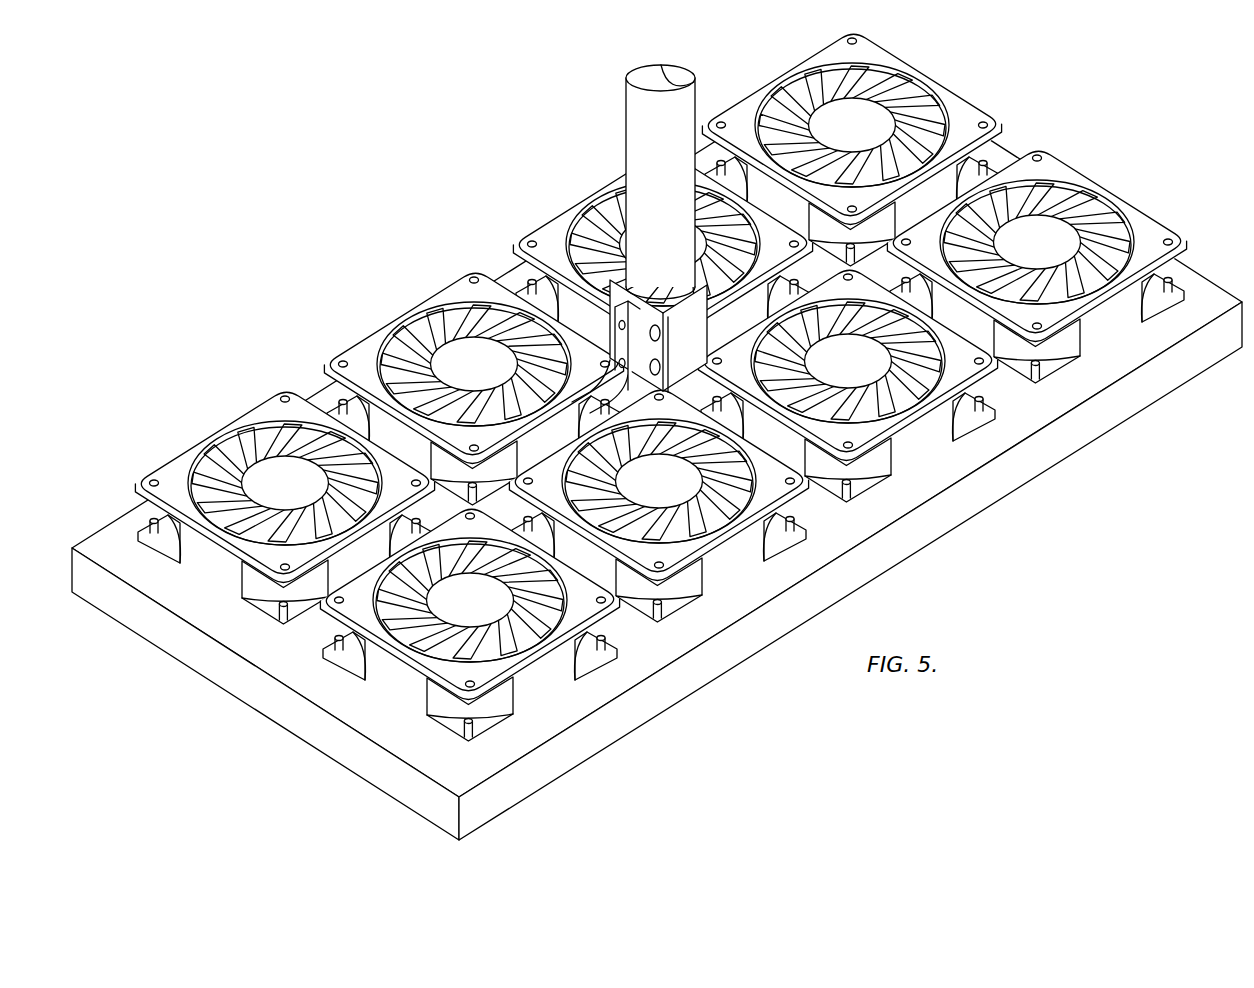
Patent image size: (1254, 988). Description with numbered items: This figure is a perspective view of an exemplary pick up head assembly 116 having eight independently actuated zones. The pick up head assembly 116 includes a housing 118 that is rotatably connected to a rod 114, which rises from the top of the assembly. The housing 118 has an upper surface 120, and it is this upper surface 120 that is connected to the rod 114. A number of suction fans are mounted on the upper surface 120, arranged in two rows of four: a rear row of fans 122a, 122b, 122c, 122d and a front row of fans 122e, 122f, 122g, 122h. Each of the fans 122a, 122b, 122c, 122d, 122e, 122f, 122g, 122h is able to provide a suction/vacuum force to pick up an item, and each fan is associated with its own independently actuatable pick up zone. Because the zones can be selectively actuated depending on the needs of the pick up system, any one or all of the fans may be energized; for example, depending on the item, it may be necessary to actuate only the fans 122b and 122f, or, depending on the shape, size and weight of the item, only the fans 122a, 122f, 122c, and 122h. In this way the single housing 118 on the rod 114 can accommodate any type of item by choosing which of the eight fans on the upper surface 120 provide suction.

The rod 114 is at (632, 103).
The pick up head assembly 116 is at (657, 430).
The housing 118 is at (248, 690).
The upper surface 120 is at (642, 653).
The suction fan 122a is at (166, 460).
The suction fan 122b is at (358, 343).
The suction fan 122c is at (562, 211).
The suction fan 122d is at (822, 56).
The suction fan 122e is at (488, 672).
The suction fan 122f is at (682, 551).
The suction fan 122g is at (868, 436).
The suction fan 122h is at (1154, 226).